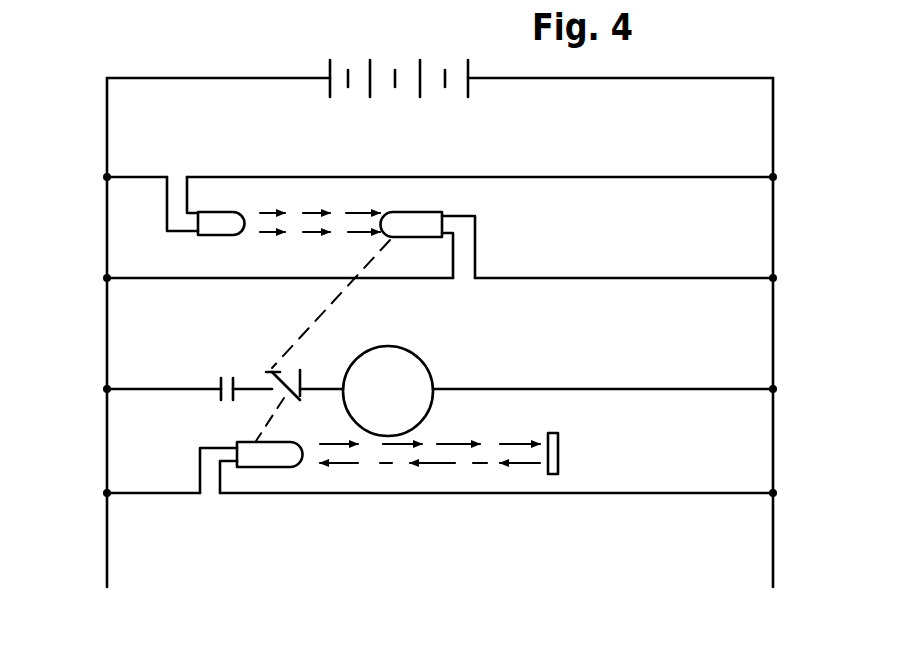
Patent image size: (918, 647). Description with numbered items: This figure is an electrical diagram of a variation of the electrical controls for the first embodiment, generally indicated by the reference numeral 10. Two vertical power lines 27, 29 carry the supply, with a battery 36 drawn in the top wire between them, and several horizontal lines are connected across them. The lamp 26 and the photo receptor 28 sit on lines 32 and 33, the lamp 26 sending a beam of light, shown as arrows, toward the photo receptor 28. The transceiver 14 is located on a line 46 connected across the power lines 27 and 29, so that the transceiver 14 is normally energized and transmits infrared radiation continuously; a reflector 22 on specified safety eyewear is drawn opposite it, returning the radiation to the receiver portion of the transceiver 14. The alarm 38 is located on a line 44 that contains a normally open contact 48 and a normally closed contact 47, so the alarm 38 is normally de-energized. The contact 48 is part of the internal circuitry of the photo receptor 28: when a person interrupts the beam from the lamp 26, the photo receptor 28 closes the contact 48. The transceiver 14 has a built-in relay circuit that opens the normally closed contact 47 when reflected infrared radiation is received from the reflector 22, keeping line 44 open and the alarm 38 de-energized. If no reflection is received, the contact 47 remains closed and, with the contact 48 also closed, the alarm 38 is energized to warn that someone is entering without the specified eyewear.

The electrical control variation of first embodiment 10 is at (100, 67).
The transceiver 14 is at (281, 457).
The reflector 22 is at (556, 453).
The lamp 26 is at (212, 224).
The power line 27 is at (107, 155).
The photo receptor 28 is at (420, 222).
The power line 29 is at (773, 143).
The line 32 is at (600, 177).
The line 33 is at (600, 278).
The battery 36 is at (330, 78).
The alarm 38 is at (414, 379).
The line 44 is at (580, 389).
The line 46 is at (658, 493).
The normally closed contact 47 is at (306, 386).
The normally open contact 48 is at (219, 386).